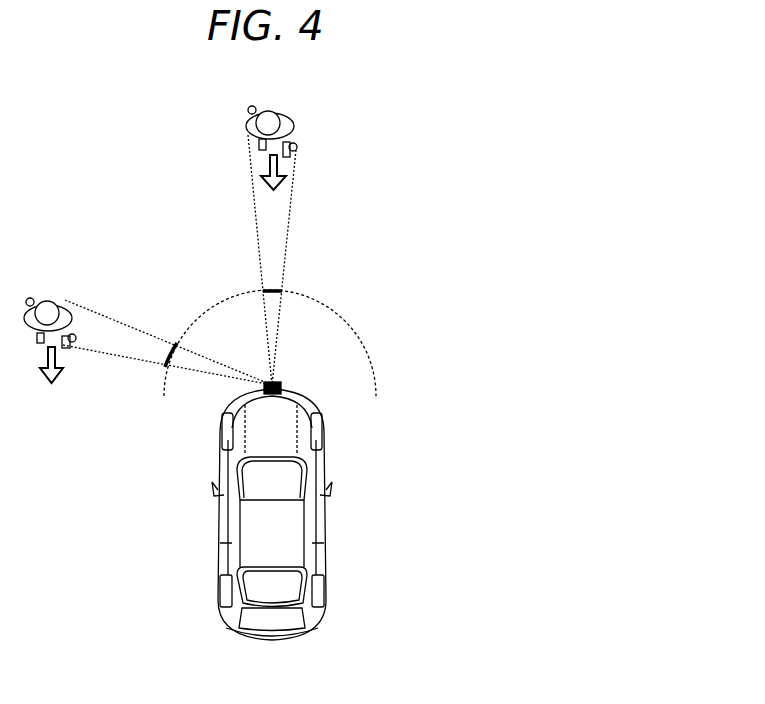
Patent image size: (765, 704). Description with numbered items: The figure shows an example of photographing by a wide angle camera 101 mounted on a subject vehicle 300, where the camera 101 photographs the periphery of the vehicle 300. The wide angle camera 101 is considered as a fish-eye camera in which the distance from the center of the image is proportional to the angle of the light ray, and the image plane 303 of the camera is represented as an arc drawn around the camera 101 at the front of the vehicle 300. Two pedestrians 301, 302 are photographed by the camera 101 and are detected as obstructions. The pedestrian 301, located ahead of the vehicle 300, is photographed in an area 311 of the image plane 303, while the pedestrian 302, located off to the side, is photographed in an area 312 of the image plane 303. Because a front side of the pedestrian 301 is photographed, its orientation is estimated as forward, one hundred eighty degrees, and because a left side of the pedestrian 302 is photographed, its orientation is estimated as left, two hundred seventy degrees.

The vehicle 300 is at (318, 477).
The wide angle camera 101 is at (280, 384).
The image plane 303 is at (378, 384).
The pedestrian 301 is at (297, 128).
The pedestrian 302 is at (50, 298).
The area 311 is at (274, 290).
The area 312 is at (173, 350).